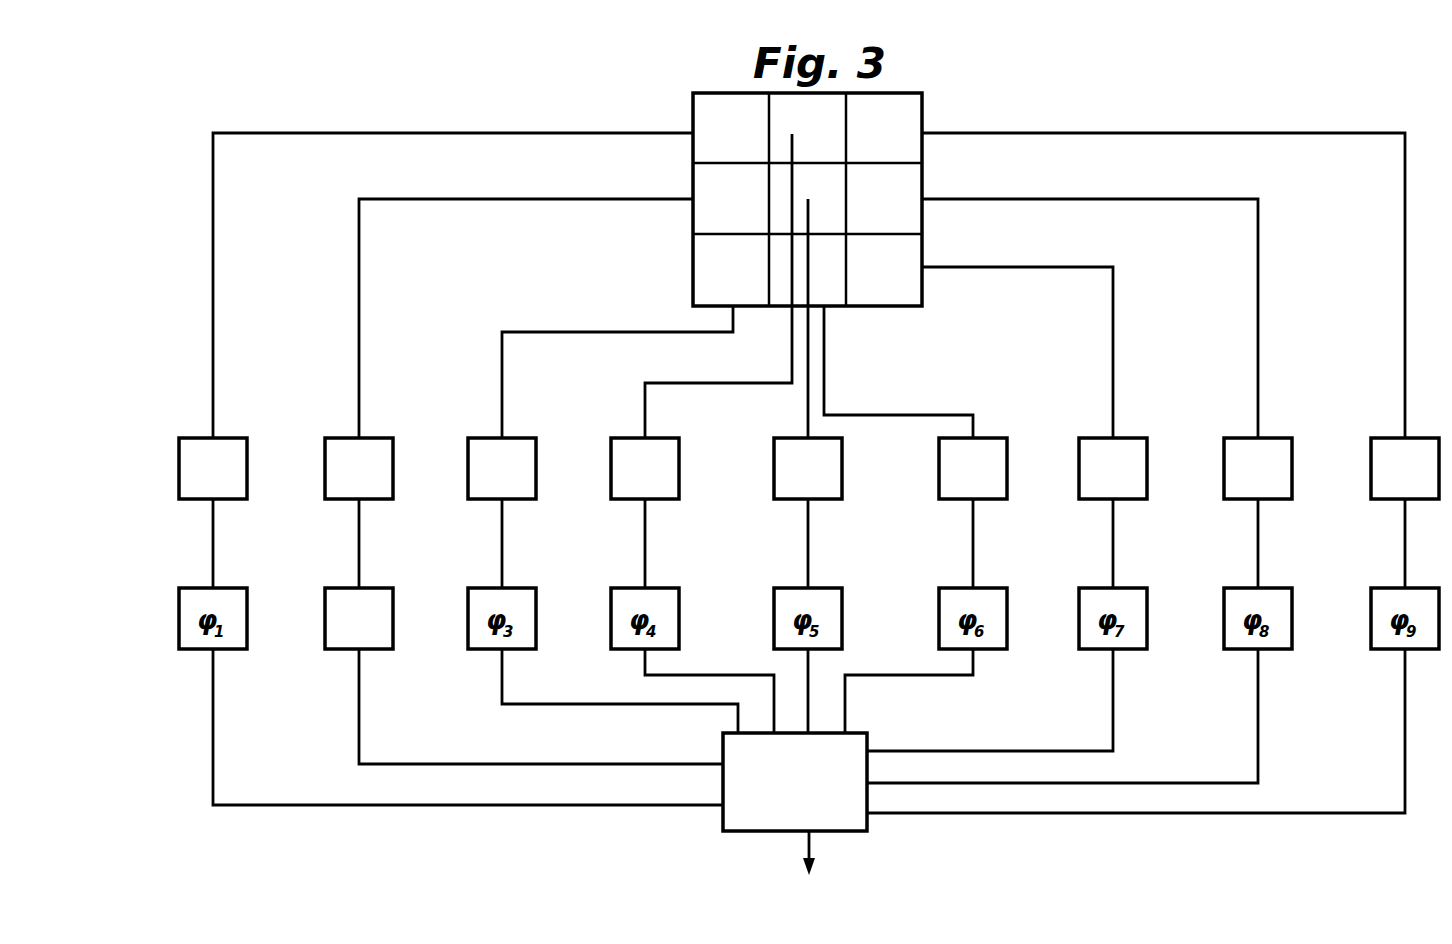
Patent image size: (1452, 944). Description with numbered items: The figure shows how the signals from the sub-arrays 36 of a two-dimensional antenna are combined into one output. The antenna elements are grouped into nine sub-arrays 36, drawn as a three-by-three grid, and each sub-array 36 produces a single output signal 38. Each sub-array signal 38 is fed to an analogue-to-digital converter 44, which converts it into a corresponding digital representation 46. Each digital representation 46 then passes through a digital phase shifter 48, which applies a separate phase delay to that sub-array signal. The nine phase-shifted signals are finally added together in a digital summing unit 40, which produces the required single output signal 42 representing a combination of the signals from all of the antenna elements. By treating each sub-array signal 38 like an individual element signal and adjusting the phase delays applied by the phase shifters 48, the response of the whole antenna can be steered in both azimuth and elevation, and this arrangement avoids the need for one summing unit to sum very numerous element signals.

The sub-array 36 is at (922, 107).
The sub-array output signal 38 is at (1405, 355).
The summing unit 40 is at (736, 834).
The single output signal 42 is at (812, 843).
The analogue-to-digital converter 44 is at (236, 438).
The digital representation 46 is at (1405, 562).
The digital phase shifter 48 is at (350, 652).